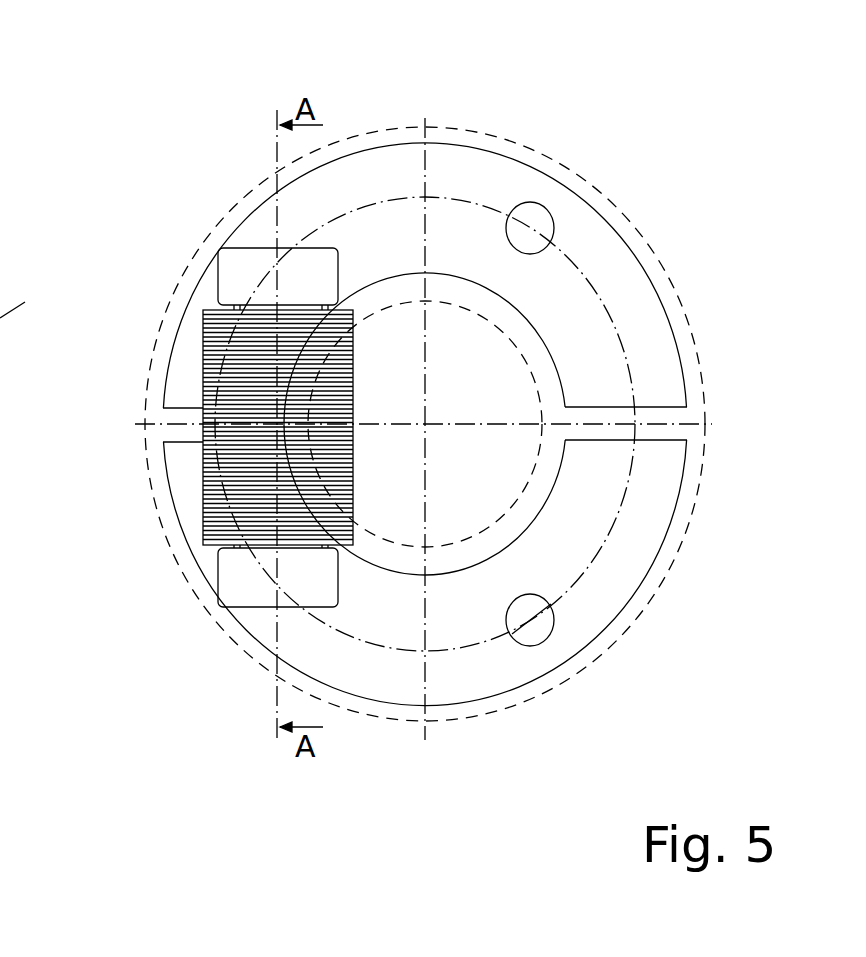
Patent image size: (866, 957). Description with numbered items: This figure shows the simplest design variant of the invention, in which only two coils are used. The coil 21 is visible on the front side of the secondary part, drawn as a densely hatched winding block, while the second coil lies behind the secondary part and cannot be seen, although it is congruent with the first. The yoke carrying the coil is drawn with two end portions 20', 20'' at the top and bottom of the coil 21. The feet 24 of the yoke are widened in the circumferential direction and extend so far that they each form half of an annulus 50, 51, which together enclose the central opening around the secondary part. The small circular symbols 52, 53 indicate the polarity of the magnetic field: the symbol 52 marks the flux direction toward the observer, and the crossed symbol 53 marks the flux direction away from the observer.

The first coil end piece 20' is at (230, 162).
The second coil end piece 20'' is at (176, 699).
The coil 21 is at (238, 373).
The feet of the yoke 24 is at (653, 335).
The half of annulus 50 is at (383, 178).
The half of annulus 51 is at (457, 668).
The polarity symbol 52 is at (530, 228).
The polarity symbol 53 is at (543, 623).